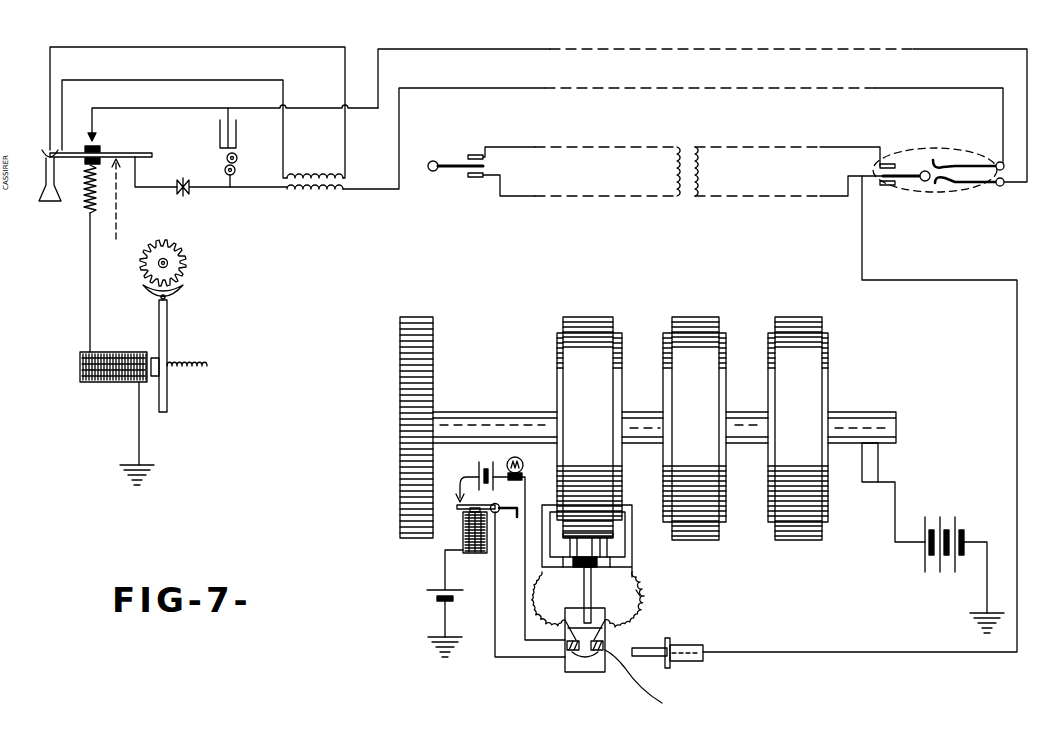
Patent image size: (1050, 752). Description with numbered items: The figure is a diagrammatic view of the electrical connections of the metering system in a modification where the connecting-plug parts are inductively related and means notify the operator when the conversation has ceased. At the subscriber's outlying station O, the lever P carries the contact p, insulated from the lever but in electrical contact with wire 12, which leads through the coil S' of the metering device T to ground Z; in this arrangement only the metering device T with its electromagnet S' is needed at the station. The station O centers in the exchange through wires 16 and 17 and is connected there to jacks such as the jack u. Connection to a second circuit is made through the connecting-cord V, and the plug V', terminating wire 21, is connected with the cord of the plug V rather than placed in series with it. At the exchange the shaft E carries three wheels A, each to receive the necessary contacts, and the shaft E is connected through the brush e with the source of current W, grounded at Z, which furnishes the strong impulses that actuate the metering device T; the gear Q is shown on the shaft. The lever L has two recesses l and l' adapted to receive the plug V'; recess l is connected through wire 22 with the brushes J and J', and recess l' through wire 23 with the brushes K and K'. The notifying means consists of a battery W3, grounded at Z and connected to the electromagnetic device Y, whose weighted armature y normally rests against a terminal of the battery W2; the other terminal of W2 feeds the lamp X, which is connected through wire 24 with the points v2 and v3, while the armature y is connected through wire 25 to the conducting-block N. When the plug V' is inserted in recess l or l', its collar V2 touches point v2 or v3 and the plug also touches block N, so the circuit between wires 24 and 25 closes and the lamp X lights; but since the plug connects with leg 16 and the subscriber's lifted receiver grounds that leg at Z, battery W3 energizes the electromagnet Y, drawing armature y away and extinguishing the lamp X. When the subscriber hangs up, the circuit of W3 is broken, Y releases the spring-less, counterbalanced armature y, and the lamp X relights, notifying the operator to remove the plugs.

The wire 16 is at (655, 52).
The wire 17 is at (678, 90).
The contact p is at (101, 151).
The lever P is at (135, 153).
The outlying station O is at (43, 197).
The wire 12 is at (88, 282).
The metering device T is at (190, 284).
The coil of the metering device S' is at (113, 385).
The ground Z is at (152, 467).
The gear wheel Q is at (412, 432).
The shaft E is at (489, 425).
The wheels A is at (598, 326).
The brush e is at (868, 462).
The source of current W is at (938, 517).
The wire 21 is at (1017, 375).
The jack u is at (978, 176).
The connecting-cord V is at (690, 187).
The source of current W2 is at (482, 474).
The lamp X is at (522, 468).
The weighted armature y is at (481, 506).
The electromagnetic device Y is at (462, 536).
The source of current W3 is at (426, 591).
The brush J' is at (564, 541).
The brush K is at (607, 553).
The brush J is at (574, 595).
The brush K' is at (624, 599).
The wire 22 is at (538, 598).
The wire 23 is at (645, 597).
The wire 25 is at (495, 616).
The wire 24 is at (525, 637).
The lever L is at (568, 620).
The point v2 is at (572, 641).
The recess l is at (563, 671).
The conducting-block N is at (607, 666).
The recess l' is at (613, 637).
The point v3 is at (642, 682).
The plug V' is at (667, 664).
The collar V2 is at (668, 642).